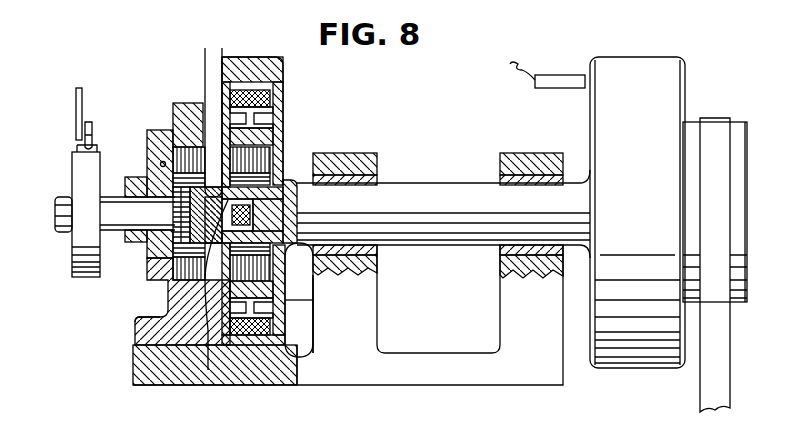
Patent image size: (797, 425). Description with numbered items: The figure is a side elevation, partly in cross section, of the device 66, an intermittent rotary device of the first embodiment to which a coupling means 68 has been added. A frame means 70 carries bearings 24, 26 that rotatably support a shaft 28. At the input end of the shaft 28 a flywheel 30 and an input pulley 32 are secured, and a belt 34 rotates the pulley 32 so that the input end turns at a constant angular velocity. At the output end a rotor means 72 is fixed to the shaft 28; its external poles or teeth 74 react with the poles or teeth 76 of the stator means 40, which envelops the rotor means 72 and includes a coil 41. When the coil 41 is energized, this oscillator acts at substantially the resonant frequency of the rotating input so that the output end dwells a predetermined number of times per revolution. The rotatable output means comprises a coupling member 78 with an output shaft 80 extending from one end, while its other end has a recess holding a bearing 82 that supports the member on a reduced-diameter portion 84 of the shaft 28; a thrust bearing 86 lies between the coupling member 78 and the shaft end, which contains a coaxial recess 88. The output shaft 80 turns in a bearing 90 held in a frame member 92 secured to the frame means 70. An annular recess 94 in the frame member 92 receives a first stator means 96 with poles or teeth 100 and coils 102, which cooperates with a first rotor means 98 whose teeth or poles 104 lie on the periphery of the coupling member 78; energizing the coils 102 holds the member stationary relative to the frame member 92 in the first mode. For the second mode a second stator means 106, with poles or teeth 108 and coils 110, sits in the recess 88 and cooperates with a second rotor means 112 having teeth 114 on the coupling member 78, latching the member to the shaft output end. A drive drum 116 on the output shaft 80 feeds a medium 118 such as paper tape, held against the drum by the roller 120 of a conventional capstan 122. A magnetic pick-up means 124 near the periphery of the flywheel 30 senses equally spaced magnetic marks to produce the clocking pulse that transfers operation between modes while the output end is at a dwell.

The bearing 24 is at (380, 178).
The bearing 26 is at (496, 182).
The shaft 28 is at (434, 190).
The flywheel 30 is at (640, 72).
The input pulley 32 is at (743, 140).
The belt 34 is at (727, 320).
The stator means 40 is at (277, 57).
The coil 41 is at (212, 180).
The device 66 is at (337, 106).
The coupling means 68 is at (216, 205).
The frame means 70 is at (350, 383).
The rotor means 72 is at (266, 139).
The external poles or teeth 74 is at (278, 136).
The poles or teeth 76 is at (285, 104).
The coupling member 78 is at (152, 185).
The output shaft 80 is at (118, 210).
The bearing 82 is at (150, 318).
The reduced-diameter portion 84 is at (162, 300).
The thrust bearing 86 is at (300, 177).
The recess 88 is at (299, 285).
The bearing 90 is at (147, 252).
The frame member 92 is at (195, 108).
The annular recess 94 is at (192, 205).
The first stator means 96 is at (245, 212).
The first rotor means 98 is at (150, 260).
The poles or teeth 100 is at (202, 195).
The coils 102 is at (206, 76).
The teeth or poles 104 is at (160, 162).
The second stator means 106 is at (286, 152).
The poles or teeth 108 is at (313, 299).
The coils 110 is at (208, 370).
The second rotor means 112 is at (285, 201).
The teeth 114 is at (303, 300).
The drive drum 116 is at (78, 243).
The medium 118 is at (78, 150).
The roller 120 is at (88, 120).
The capstan 122 is at (76, 118).
The magnetic pick-up means 124 is at (560, 62).